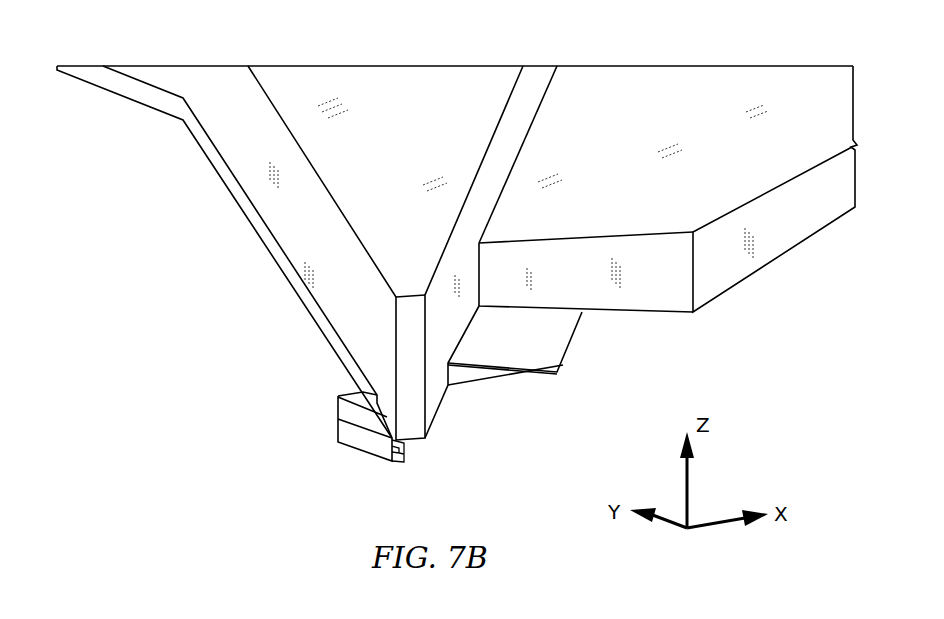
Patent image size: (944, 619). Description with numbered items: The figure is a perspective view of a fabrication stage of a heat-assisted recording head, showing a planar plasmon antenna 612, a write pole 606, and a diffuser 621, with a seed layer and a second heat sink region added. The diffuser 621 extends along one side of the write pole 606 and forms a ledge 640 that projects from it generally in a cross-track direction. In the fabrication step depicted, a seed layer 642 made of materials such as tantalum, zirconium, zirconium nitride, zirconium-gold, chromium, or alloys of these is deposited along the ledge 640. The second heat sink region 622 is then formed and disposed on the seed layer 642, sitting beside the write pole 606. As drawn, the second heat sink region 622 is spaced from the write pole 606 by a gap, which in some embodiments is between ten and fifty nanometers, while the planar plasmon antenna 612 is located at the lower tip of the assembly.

The write pole 606 is at (397, 115).
The diffuser 621 is at (243, 191).
The second heat sink region 622 is at (672, 95).
The planar plasmon antenna 612 is at (336, 462).
The ledge 640 is at (468, 373).
The seed layer 642 is at (513, 333).